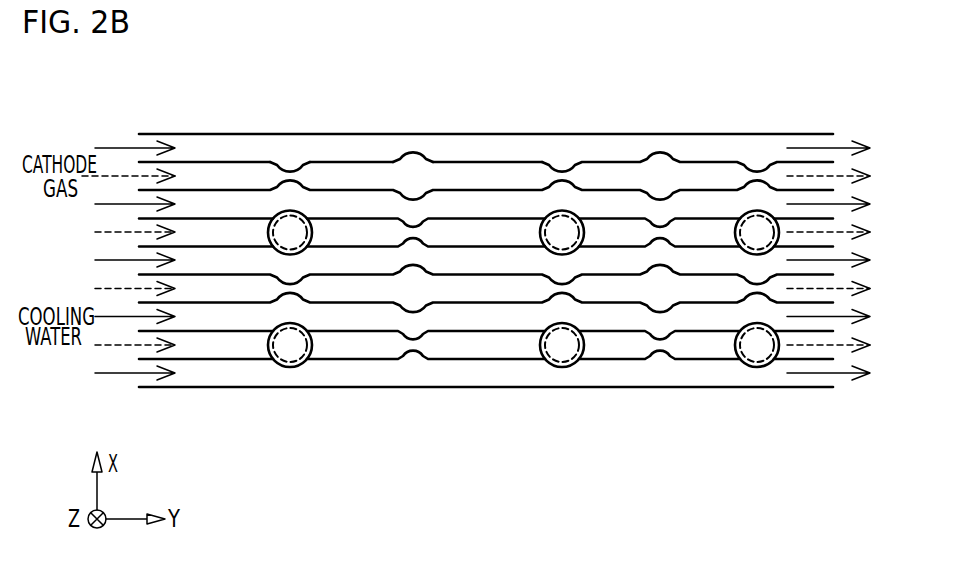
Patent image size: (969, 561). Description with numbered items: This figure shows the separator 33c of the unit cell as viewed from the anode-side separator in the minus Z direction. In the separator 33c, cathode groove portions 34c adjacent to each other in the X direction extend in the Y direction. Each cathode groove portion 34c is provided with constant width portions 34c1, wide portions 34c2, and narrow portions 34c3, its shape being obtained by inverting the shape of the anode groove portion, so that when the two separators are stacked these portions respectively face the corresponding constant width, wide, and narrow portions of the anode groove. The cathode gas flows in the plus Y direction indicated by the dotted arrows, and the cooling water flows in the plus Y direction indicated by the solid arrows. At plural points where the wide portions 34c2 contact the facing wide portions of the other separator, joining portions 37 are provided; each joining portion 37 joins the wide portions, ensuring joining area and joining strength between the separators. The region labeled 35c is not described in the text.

The separator 33c is at (814, 406).
The cathode groove portion 34c is at (252, 172).
The constant width portion 34c1 is at (523, 180).
The wide portion 34c2 is at (413, 170).
The narrow portion 34c3 is at (273, 160).
The cathode gas flow path 35c is at (720, 136).
The joining portion 37 is at (310, 222).